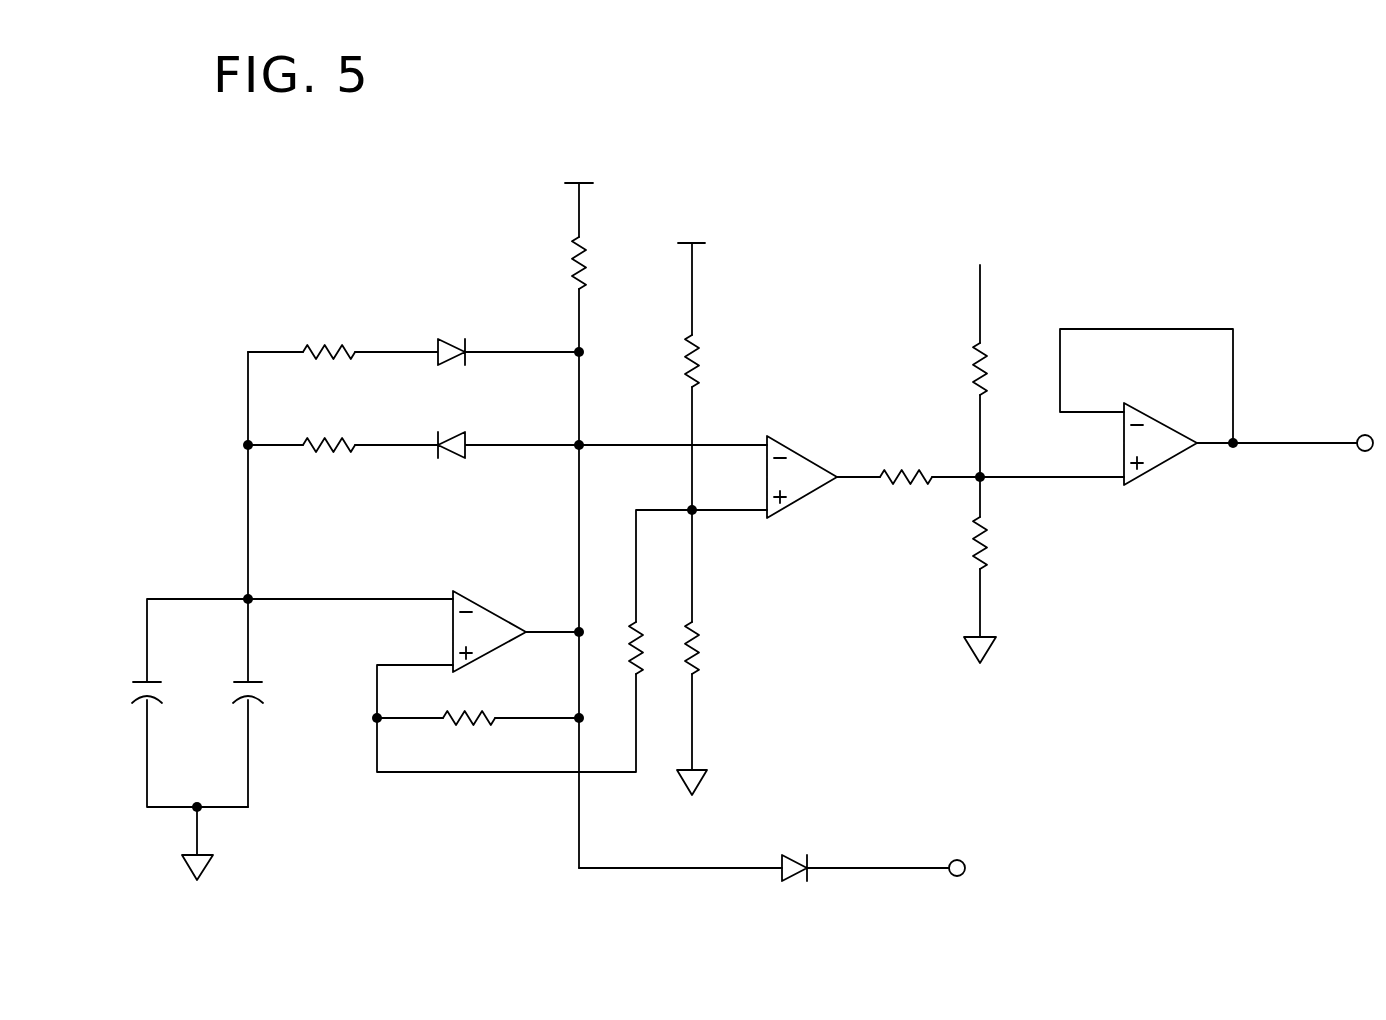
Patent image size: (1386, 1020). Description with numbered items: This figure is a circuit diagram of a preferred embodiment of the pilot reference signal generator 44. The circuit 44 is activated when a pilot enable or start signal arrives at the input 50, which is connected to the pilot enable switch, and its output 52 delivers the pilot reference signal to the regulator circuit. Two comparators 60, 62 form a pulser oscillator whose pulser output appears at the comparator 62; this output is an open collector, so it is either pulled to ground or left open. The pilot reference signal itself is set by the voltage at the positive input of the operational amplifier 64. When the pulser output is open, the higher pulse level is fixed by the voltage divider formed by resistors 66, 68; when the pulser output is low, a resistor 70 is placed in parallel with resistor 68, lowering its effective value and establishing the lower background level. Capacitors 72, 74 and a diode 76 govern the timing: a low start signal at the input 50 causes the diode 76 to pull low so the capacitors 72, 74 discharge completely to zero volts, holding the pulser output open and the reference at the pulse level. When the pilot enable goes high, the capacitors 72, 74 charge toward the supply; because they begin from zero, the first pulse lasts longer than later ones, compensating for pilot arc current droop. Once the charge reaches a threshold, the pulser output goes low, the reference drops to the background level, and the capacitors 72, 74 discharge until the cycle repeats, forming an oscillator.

The pilot reference signal generator 44 is at (872, 230).
The input 50 is at (957, 857).
The output 52 is at (1365, 432).
The comparator 60 is at (493, 610).
The comparator 62 is at (820, 455).
The operational amplifier 64 is at (1165, 423).
The resistor 66 is at (977, 383).
The resistor 68 is at (977, 553).
The resistor 70 is at (907, 483).
The capacitor 72 is at (142, 678).
The capacitor 74 is at (243, 678).
The diode 76 is at (788, 853).